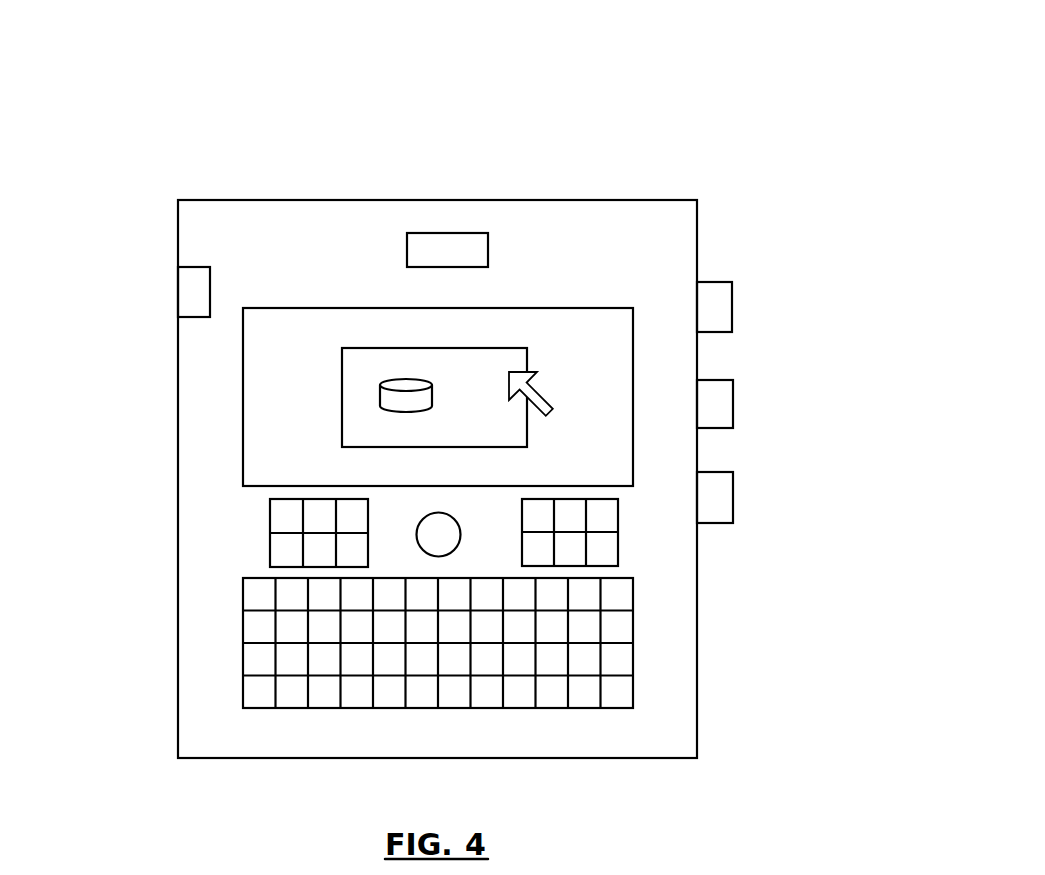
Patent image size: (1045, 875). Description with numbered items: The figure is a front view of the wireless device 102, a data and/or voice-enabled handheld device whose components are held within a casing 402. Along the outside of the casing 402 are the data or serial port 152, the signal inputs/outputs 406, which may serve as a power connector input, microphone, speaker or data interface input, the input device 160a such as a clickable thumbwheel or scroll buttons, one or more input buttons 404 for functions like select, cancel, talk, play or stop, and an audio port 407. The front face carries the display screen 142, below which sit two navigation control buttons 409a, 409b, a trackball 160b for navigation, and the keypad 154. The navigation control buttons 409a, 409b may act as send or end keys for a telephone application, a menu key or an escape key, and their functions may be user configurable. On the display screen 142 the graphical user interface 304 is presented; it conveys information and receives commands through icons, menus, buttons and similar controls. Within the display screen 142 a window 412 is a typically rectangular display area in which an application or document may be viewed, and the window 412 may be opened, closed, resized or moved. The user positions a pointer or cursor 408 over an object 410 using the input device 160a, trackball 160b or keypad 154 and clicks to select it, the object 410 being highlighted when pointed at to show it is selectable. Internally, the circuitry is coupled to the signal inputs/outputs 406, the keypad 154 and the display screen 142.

The wireless device 102 is at (661, 94).
The casing 402 is at (310, 233).
The data or serial port 152 is at (193, 292).
The signal inputs/outputs 406 is at (452, 232).
The display screen 142 is at (242, 350).
The graphical user interface 304 is at (260, 382).
The object 410 is at (382, 396).
The window 412 is at (487, 366).
The pointer or cursor 408 is at (551, 410).
The navigation control button 409a is at (270, 512).
The navigation control button 409b is at (618, 522).
The trackball 160b is at (443, 553).
The keypad 154 is at (635, 623).
The input device 160a is at (732, 307).
The input buttons 404 is at (733, 403).
The audio port 407 is at (733, 497).